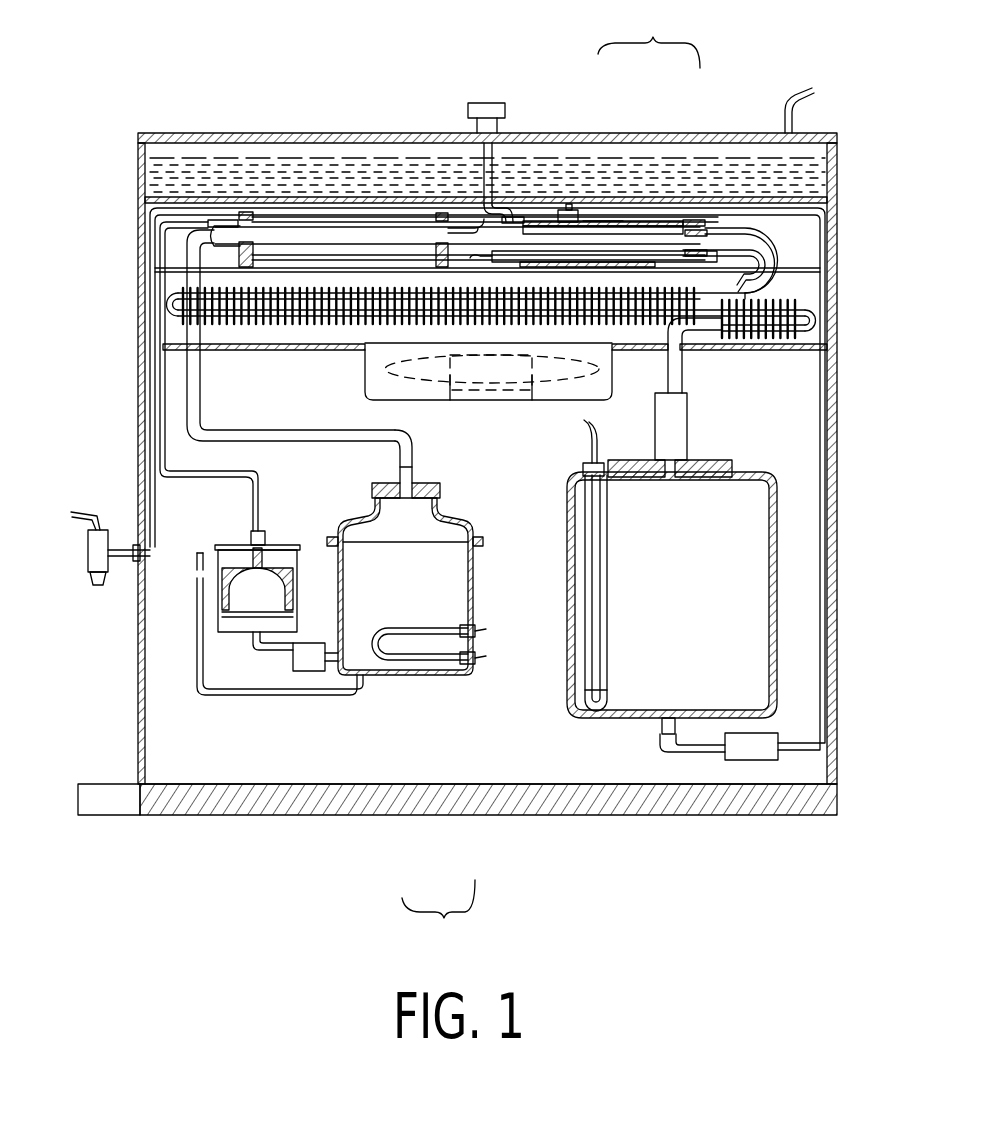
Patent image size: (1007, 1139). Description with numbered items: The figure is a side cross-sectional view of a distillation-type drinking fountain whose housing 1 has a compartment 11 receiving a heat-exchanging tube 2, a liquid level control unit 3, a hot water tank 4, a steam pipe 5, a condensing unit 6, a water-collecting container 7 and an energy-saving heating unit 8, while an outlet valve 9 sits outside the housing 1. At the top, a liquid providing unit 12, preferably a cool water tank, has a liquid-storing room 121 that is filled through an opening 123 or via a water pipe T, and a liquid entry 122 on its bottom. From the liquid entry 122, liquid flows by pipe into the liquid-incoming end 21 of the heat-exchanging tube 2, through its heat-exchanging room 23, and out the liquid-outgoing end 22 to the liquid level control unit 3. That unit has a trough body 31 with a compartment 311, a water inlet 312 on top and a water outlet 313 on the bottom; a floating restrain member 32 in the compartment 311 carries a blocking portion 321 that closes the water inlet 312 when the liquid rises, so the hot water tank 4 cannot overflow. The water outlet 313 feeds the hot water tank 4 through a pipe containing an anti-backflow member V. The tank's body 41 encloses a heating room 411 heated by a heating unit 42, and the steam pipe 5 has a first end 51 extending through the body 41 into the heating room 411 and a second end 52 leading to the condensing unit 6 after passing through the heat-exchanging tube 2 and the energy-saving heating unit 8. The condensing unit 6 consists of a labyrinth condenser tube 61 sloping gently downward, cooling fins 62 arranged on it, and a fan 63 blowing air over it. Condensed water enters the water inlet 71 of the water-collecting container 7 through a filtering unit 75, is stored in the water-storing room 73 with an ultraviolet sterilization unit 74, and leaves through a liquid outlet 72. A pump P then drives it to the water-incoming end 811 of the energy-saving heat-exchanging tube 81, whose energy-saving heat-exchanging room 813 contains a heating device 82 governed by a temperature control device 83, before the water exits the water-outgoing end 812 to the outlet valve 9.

The housing 1 is at (165, 816).
The compartment 11 is at (520, 764).
The liquid providing unit 12 is at (134, 178).
The liquid-storing room 121 is at (187, 148).
The liquid entry 122 is at (505, 207).
The opening 123 is at (518, 133).
The heat-exchanging tube 2 is at (333, 218).
The liquid-incoming end 21 is at (478, 208).
The liquid-outgoing end 22 is at (246, 212).
The heat-exchanging room 23 is at (282, 228).
The liquid level control unit 3 is at (236, 652).
The trough body 31 is at (215, 655).
The compartment 311 is at (222, 545).
The water inlet 312 is at (252, 530).
The water outlet 313 is at (255, 652).
The restrain member 32 is at (225, 580).
The blocking portion 321 is at (262, 560).
The hot water tank 4 is at (406, 721).
The body 41 is at (400, 678).
The heating room 411 is at (458, 597).
The heating unit 42 is at (440, 660).
The steam pipe 5 is at (187, 375).
The first end 51 is at (412, 456).
The second end 52 is at (775, 268).
The condensing unit 6 is at (834, 338).
The condenser tube 61 is at (777, 248).
The cooling fins 62 is at (770, 342).
The fan 63 is at (390, 378).
The water-collecting container 7 is at (803, 569).
The water inlet 71 is at (672, 475).
The liquid outlet 72 is at (665, 712).
The water-storing room 73 is at (760, 634).
The sterilization unit 74 is at (598, 680).
The filtering unit 75 is at (690, 410).
The energy-saving heating unit 8 is at (649, 35).
The energy-saving heat-exchanging tube 81 is at (632, 240).
The water-incoming end 811 is at (703, 225).
The water-outgoing end 812 is at (492, 133).
The energy-saving heat-exchanging room 813 is at (560, 222).
The heating device 82 is at (680, 255).
The temperature control device 83 is at (597, 230).
The outlet valve 9 is at (95, 550).
The anti-backflow member V is at (312, 668).
The pump P is at (762, 760).
The water pipe T is at (803, 90).